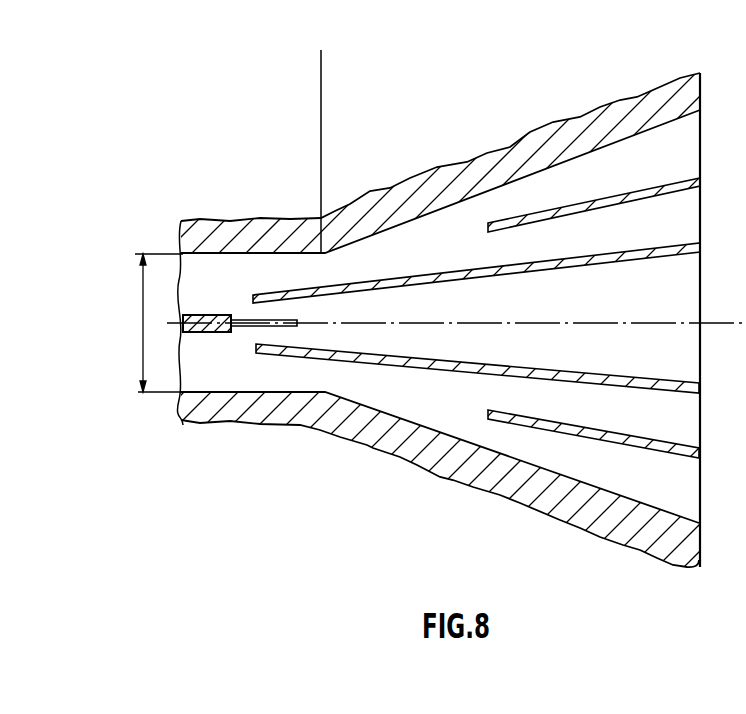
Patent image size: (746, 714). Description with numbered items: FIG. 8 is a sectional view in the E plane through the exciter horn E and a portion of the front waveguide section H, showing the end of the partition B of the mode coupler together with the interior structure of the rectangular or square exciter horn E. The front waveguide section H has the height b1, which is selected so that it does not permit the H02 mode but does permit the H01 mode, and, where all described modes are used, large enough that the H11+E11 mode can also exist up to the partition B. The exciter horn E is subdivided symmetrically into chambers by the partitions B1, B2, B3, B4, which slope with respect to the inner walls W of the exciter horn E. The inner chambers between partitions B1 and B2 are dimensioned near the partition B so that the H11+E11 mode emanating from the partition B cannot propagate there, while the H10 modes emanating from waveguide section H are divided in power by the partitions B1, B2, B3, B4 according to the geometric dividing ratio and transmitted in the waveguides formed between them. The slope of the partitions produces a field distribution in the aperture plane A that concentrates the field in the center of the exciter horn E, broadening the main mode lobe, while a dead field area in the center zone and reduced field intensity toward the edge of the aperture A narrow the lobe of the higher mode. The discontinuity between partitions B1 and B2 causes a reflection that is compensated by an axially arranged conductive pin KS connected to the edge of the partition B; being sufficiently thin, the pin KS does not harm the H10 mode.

The inner walls W is at (525, 175).
The aperture plane A is at (700, 502).
The front waveguide section H is at (281, 151).
The exciter horn E is at (456, 187).
The partition B1 is at (420, 280).
The partition B2 is at (440, 365).
The partition B3 is at (637, 197).
The partition B4 is at (558, 428).
The partition B is at (207, 314).
The conductive pin KS is at (248, 328).
The waveguide height b1 is at (160, 323).